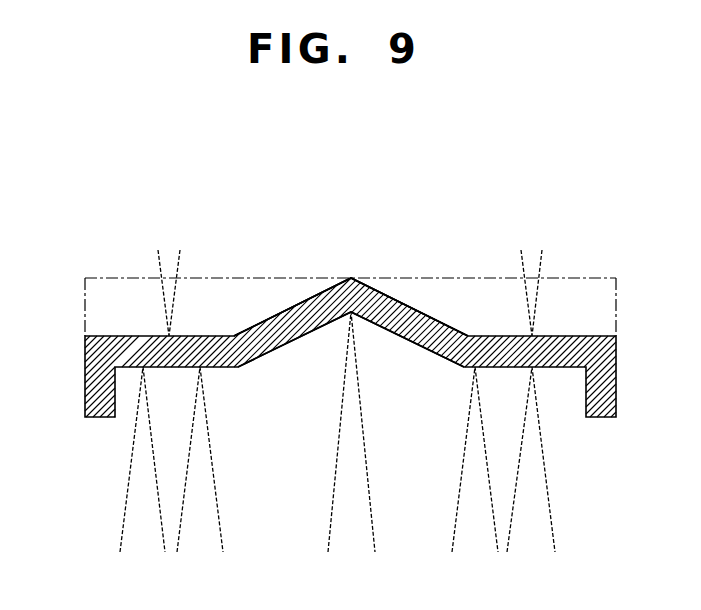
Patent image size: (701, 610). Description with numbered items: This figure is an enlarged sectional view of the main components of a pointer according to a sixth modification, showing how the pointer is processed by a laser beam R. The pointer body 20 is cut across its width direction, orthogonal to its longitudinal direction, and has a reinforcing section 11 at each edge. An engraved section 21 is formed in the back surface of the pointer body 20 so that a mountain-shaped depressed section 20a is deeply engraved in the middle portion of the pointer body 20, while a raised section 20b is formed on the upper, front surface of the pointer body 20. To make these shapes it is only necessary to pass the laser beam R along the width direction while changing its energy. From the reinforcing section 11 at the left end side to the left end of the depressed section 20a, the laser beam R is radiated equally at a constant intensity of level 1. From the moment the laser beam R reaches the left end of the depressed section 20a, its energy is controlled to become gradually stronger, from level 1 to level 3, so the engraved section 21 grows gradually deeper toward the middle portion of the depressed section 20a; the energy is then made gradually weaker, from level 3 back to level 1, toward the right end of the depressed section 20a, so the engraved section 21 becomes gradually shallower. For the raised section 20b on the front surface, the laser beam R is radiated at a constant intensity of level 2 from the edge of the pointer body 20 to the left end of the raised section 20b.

The level 1 (constant laser beam intensity) 1 is at (337, 472).
The level 2 (laser beam intensity) 2 is at (350, 282).
The level 3 (laser beam intensity) 3 is at (351, 445).
The reinforcing section 11 is at (97, 406).
The pointer body 20 is at (344, 268).
The depressed section 20a is at (377, 339).
The raised section 20b is at (301, 310).
The engraved section 21 is at (409, 382).
The laser beam R is at (158, 257).